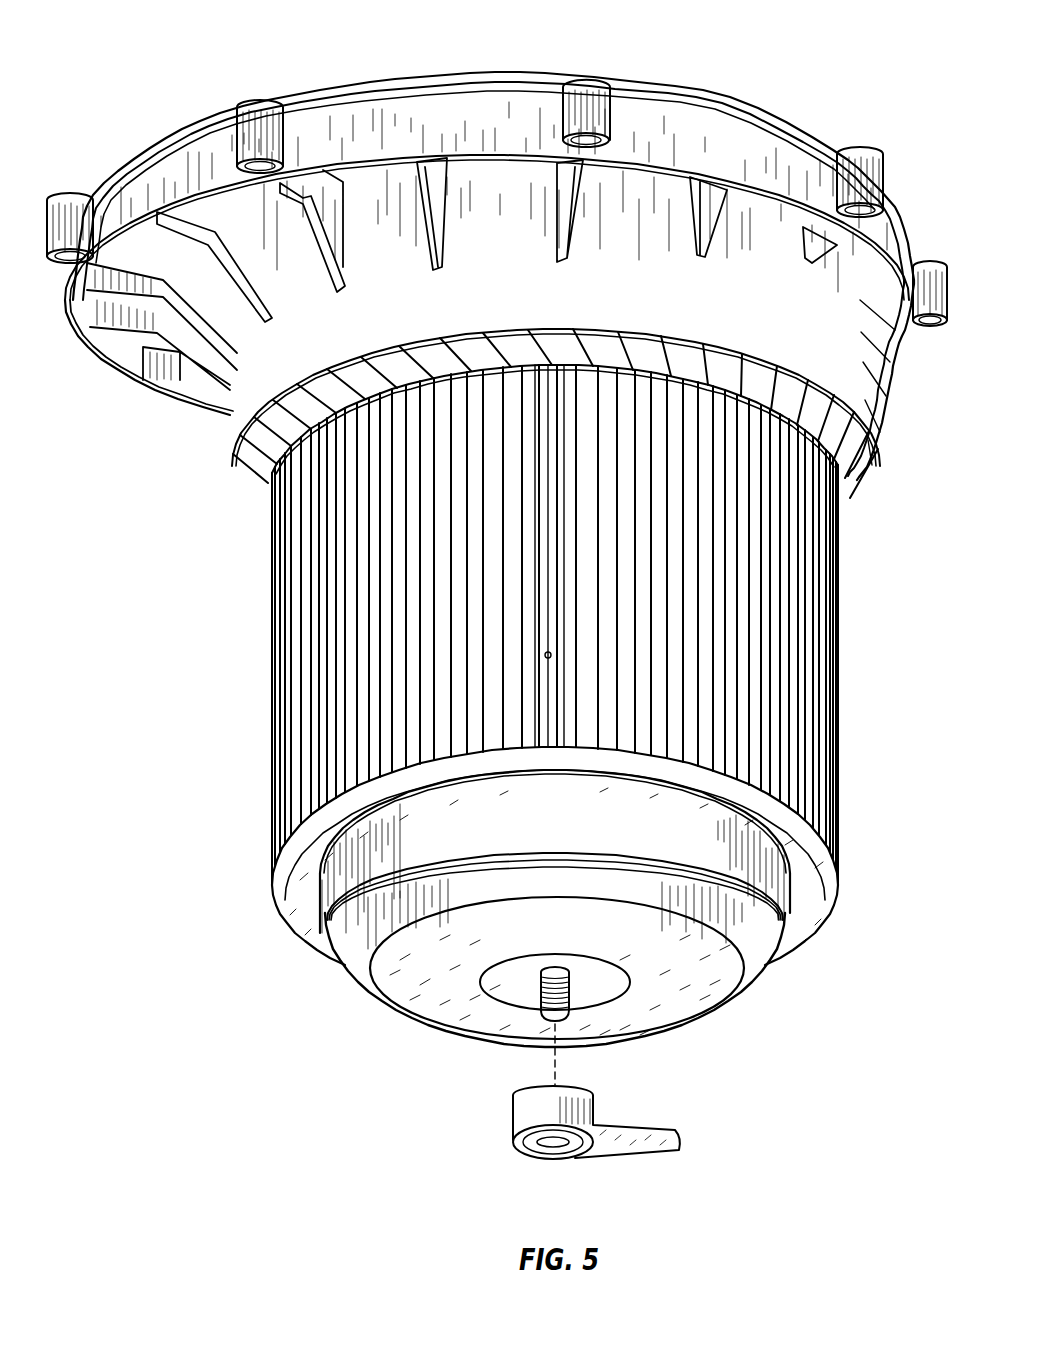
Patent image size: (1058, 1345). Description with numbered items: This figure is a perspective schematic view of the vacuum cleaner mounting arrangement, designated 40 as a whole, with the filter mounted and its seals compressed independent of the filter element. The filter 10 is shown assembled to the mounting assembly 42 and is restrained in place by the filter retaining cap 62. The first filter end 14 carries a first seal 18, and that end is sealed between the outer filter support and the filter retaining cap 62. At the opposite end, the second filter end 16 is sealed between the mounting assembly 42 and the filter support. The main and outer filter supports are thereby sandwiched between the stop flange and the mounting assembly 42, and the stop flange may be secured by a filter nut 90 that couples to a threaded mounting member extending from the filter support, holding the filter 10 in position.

The filter 10 is at (845, 620).
The first filter end 14 is at (843, 886).
The second filter end 16 is at (830, 440).
The first seal 18 is at (787, 900).
The mounting frame assembly 40 is at (499, 264).
The mounting assembly 42 is at (873, 405).
The filter retaining cap 62 is at (683, 1027).
The filter nut 90 is at (672, 1137).